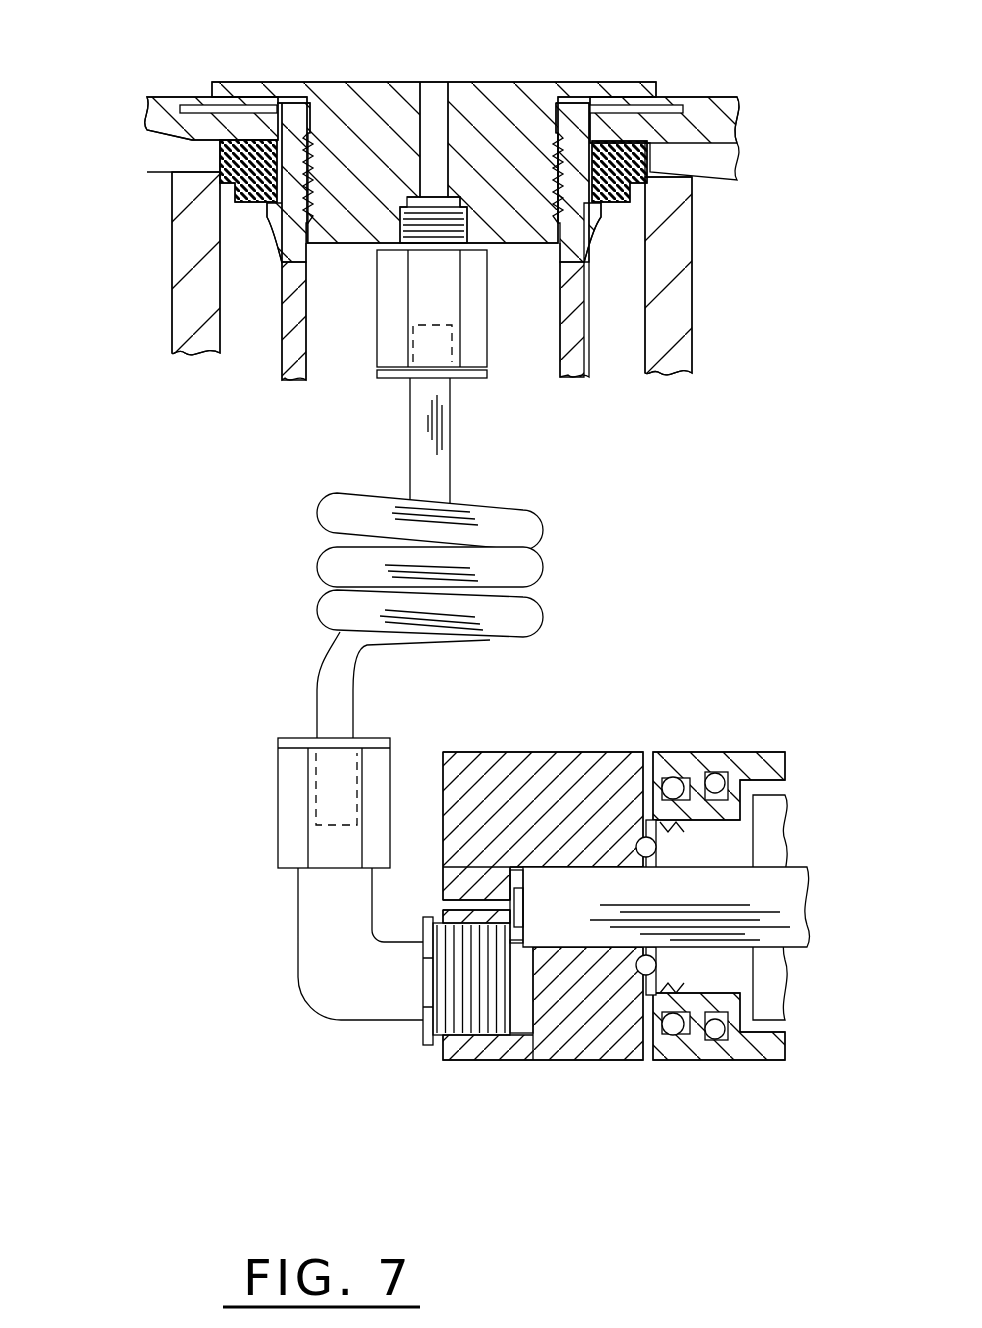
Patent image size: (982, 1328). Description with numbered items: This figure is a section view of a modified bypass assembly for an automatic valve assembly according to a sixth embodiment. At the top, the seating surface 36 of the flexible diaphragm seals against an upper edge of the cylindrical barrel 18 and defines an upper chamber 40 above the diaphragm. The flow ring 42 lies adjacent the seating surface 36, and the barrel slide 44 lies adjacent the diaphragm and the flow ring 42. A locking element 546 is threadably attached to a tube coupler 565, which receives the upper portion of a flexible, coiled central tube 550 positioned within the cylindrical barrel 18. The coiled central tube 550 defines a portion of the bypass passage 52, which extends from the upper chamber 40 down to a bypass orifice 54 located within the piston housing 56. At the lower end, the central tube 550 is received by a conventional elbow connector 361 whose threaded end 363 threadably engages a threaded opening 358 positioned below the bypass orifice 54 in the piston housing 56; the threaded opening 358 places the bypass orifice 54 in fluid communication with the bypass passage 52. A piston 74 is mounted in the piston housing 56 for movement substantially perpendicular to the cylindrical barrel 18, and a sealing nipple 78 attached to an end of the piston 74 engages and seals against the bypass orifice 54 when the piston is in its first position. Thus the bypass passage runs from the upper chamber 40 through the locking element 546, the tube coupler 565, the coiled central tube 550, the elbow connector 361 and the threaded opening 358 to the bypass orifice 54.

The upper chamber 40 is at (393, 32).
The bypass passage 52 is at (433, 97).
The seating surface 36 is at (147, 175).
The cylindrical barrel 18 is at (193, 293).
The flow ring 42 is at (645, 228).
The barrel slide 44 is at (290, 345).
The locking element 546 is at (513, 233).
The tube coupler 565 is at (490, 365).
The flexible, coiled central tube 550 is at (548, 560).
The elbow connector 361 is at (278, 830).
The bypass orifice 54 is at (443, 903).
The threaded end 363 is at (433, 1046).
The threaded opening 358 is at (480, 1046).
The piston housing 56 is at (620, 1060).
The piston 74 is at (605, 923).
The sealing nipple 78 is at (518, 888).